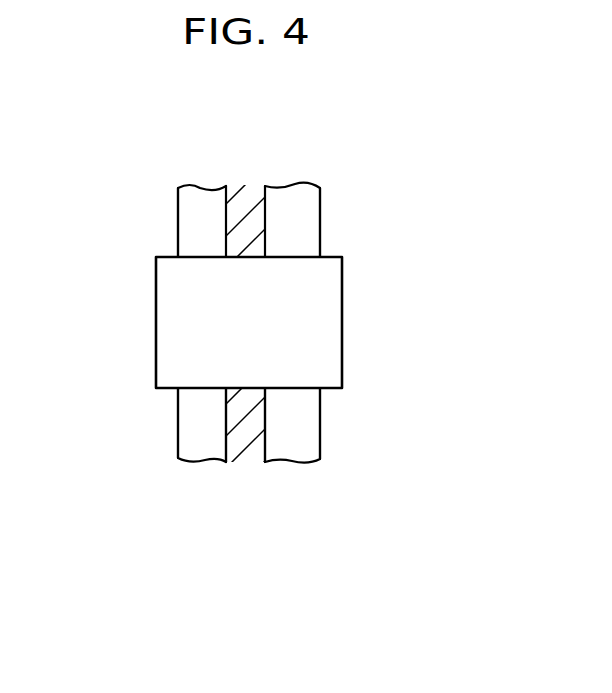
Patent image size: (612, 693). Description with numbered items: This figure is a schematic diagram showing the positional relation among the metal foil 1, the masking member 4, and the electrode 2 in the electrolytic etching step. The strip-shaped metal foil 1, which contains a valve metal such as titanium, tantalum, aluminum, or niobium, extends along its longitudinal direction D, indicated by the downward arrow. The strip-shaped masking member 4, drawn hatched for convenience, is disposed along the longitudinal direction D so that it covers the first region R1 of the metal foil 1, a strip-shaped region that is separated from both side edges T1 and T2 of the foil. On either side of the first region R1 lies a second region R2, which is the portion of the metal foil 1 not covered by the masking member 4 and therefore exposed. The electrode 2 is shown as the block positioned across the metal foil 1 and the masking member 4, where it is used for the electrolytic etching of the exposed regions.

The metal foil 1 is at (178, 508).
The electrode 2 is at (318, 331).
The masking member 4 is at (245, 204).
The side edge T1 is at (178, 208).
The side edge T2 is at (320, 222).
The longitudinal direction D is at (117, 280).
The first region R1 is at (226, 468).
The second region R2 is at (222, 468).